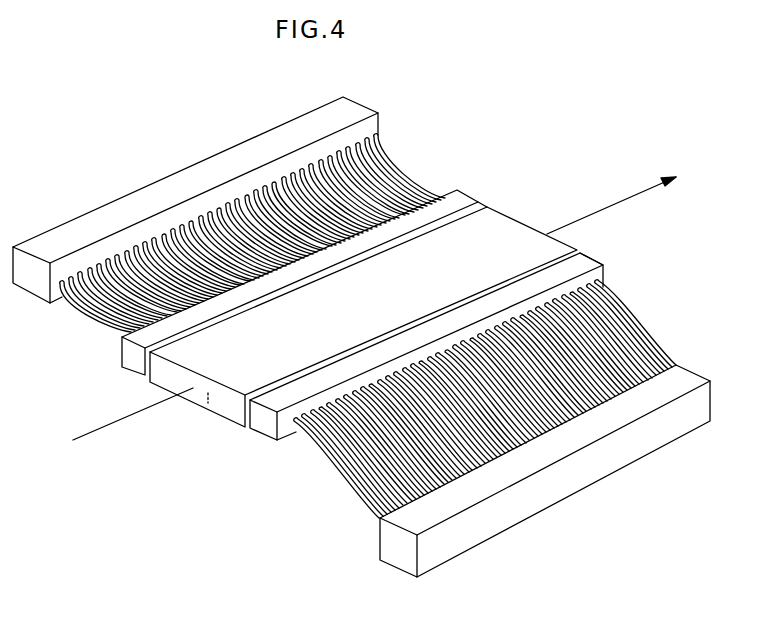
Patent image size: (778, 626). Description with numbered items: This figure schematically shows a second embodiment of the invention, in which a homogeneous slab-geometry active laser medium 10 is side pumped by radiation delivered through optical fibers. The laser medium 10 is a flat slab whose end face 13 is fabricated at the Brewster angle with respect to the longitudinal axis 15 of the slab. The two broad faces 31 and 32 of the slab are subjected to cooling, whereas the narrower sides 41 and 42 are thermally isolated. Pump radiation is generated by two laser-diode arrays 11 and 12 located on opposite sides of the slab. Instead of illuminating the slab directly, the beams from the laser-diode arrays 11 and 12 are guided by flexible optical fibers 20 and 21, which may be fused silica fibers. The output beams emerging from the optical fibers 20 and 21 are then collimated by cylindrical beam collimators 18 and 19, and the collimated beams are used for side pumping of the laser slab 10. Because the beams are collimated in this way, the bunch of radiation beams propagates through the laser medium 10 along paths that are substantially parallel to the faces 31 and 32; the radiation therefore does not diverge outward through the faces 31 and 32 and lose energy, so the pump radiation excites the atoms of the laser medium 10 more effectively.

The slab-geometry active laser medium 10 is at (557, 215).
The laser-diode array 11 is at (582, 489).
The laser-diode array 12 is at (198, 161).
The end face 13 is at (402, 345).
The longitudinal axis 15 is at (123, 420).
The cylindrical beam collimator 18 is at (606, 264).
The cylindrical beam collimator 19 is at (273, 277).
The flexible optical fiber 20 is at (647, 337).
The flexible optical fiber 21 is at (399, 157).
The face 31 is at (494, 222).
The face 32 is at (207, 408).
The side 41 is at (248, 407).
The side 42 is at (144, 362).